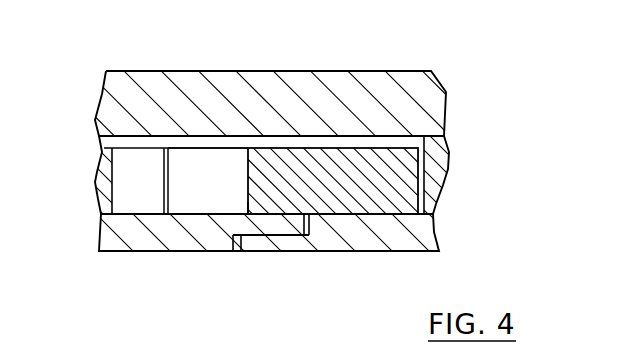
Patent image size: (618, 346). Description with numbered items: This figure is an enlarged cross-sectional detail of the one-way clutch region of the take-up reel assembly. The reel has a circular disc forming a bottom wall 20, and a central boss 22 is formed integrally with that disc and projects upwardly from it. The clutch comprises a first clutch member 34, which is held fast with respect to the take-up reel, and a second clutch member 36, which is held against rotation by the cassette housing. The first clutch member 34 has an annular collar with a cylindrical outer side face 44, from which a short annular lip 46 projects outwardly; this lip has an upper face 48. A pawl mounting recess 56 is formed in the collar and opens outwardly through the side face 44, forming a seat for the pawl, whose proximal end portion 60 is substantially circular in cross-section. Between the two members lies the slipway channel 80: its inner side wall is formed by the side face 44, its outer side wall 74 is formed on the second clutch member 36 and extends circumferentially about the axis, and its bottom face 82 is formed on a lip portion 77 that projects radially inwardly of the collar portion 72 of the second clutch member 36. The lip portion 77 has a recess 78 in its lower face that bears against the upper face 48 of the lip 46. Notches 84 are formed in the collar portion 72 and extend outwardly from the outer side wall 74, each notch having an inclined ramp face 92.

The bottom wall 20 is at (352, 82).
The central boss 22 is at (435, 153).
The first clutch member 34 is at (408, 237).
The second clutch member 36 is at (138, 252).
The outer side face 44 is at (305, 142).
The annular lip 46 is at (302, 252).
The upper face 48 is at (259, 252).
The pawl mounting recess 56 is at (387, 134).
The proximal end portion 60 is at (407, 187).
The collar portion 72 is at (103, 162).
The outer side wall 74 is at (163, 182).
The lip portion 77 is at (215, 252).
The recess 78 is at (243, 213).
The slipway channel 80 is at (205, 154).
The bottom face 82 is at (193, 252).
The first pair of notches 84 is at (127, 208).
The inclined ramp face 92 is at (115, 192).